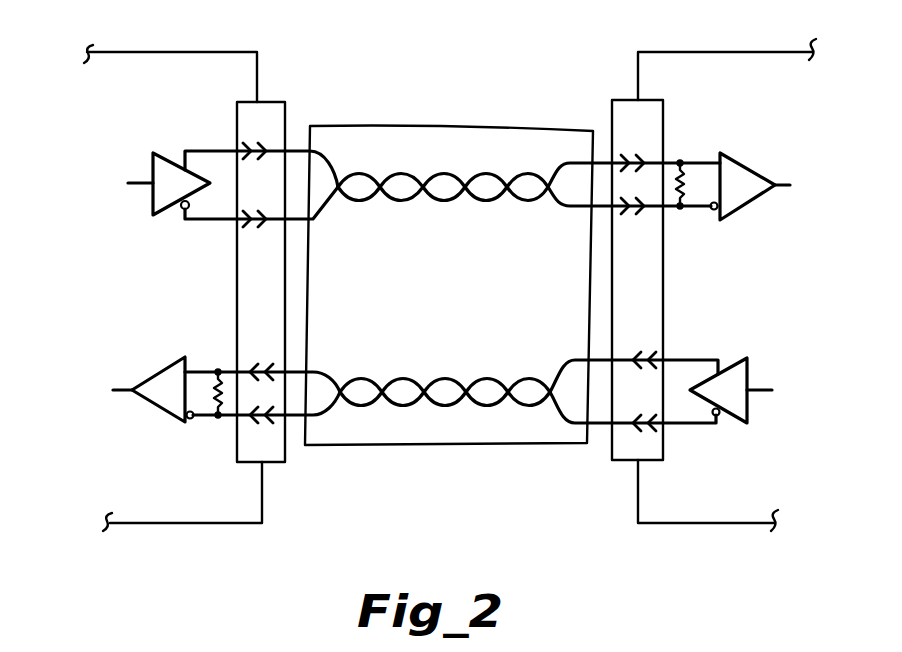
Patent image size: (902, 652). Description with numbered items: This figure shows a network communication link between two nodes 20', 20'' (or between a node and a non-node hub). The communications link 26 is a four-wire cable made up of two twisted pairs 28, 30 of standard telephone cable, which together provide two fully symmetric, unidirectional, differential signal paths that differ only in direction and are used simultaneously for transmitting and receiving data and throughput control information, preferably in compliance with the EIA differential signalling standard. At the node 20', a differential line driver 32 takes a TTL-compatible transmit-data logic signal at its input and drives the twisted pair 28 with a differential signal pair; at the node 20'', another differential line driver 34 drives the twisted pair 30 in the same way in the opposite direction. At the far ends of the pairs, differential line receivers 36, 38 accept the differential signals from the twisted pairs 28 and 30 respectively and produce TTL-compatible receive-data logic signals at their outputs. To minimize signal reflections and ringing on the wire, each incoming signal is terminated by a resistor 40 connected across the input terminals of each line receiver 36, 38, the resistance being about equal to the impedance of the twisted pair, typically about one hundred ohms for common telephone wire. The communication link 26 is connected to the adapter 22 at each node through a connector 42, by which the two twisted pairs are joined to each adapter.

The node 20' is at (182, 529).
The node 20'' is at (708, 535).
The adapter 22 is at (181, 52).
The communications link 26 is at (410, 115).
The twisted pair 28 is at (465, 187).
The twisted pair 30 is at (467, 392).
The differential line driver 32 is at (168, 158).
The differential line driver 34 is at (737, 420).
The differential line receiver 36 is at (745, 212).
The differential line receiver 38 is at (158, 370).
The resistor 40 is at (684, 178).
The connector 42 is at (284, 102).